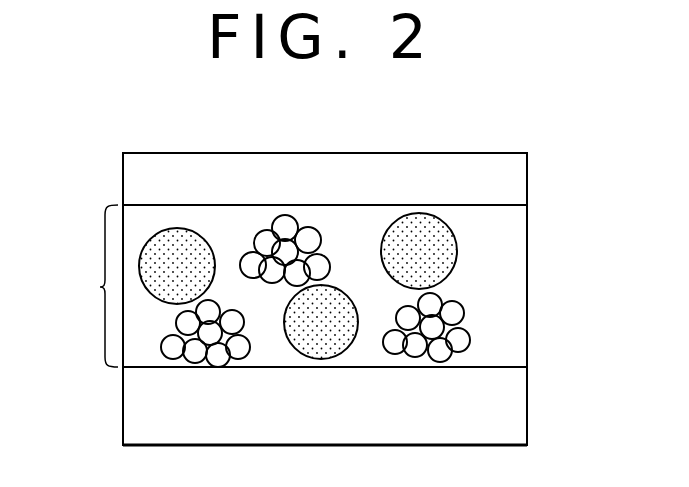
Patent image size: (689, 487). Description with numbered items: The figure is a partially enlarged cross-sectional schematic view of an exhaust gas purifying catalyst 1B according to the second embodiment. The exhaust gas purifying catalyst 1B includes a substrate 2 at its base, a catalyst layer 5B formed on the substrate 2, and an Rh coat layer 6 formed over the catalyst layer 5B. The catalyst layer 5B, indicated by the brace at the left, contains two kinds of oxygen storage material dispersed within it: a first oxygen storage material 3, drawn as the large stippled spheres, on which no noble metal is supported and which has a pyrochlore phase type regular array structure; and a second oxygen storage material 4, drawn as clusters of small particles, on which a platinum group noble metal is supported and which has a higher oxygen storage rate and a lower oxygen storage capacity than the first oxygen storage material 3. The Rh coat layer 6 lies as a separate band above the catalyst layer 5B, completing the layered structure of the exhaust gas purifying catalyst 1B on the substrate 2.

The exhaust gas purifying catalyst 1B is at (532, 345).
The substrate 2 is at (517, 423).
The first oxygen storage material 3 is at (455, 236).
The second oxygen storage material 4 is at (264, 224).
The catalyst layer 5B is at (85, 286).
The Rh coat layer 6 is at (358, 177).